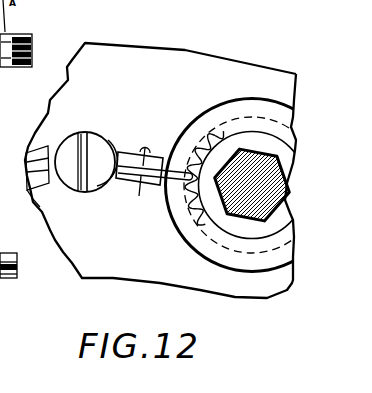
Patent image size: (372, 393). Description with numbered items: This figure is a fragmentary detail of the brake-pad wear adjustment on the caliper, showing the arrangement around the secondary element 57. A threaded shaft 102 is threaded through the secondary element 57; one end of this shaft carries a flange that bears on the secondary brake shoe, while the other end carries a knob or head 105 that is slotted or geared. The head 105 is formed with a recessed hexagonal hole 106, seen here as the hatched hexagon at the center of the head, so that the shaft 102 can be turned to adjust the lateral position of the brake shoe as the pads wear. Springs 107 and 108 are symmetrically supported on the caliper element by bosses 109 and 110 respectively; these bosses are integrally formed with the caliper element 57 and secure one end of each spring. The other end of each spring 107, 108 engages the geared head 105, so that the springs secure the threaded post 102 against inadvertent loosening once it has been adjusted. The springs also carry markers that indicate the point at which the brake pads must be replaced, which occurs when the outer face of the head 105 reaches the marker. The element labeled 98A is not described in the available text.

The secondary element 57 is at (133, 57).
The threaded shaft 102 is at (213, 105).
The head 105 is at (190, 205).
The recessed hexagonal hole 106 is at (262, 163).
The screw 98A is at (86, 130).
The spring 107 is at (33, 155).
The boss 109 is at (32, 186).
The boss 110 is at (122, 184).
The spring 108 is at (178, 168).